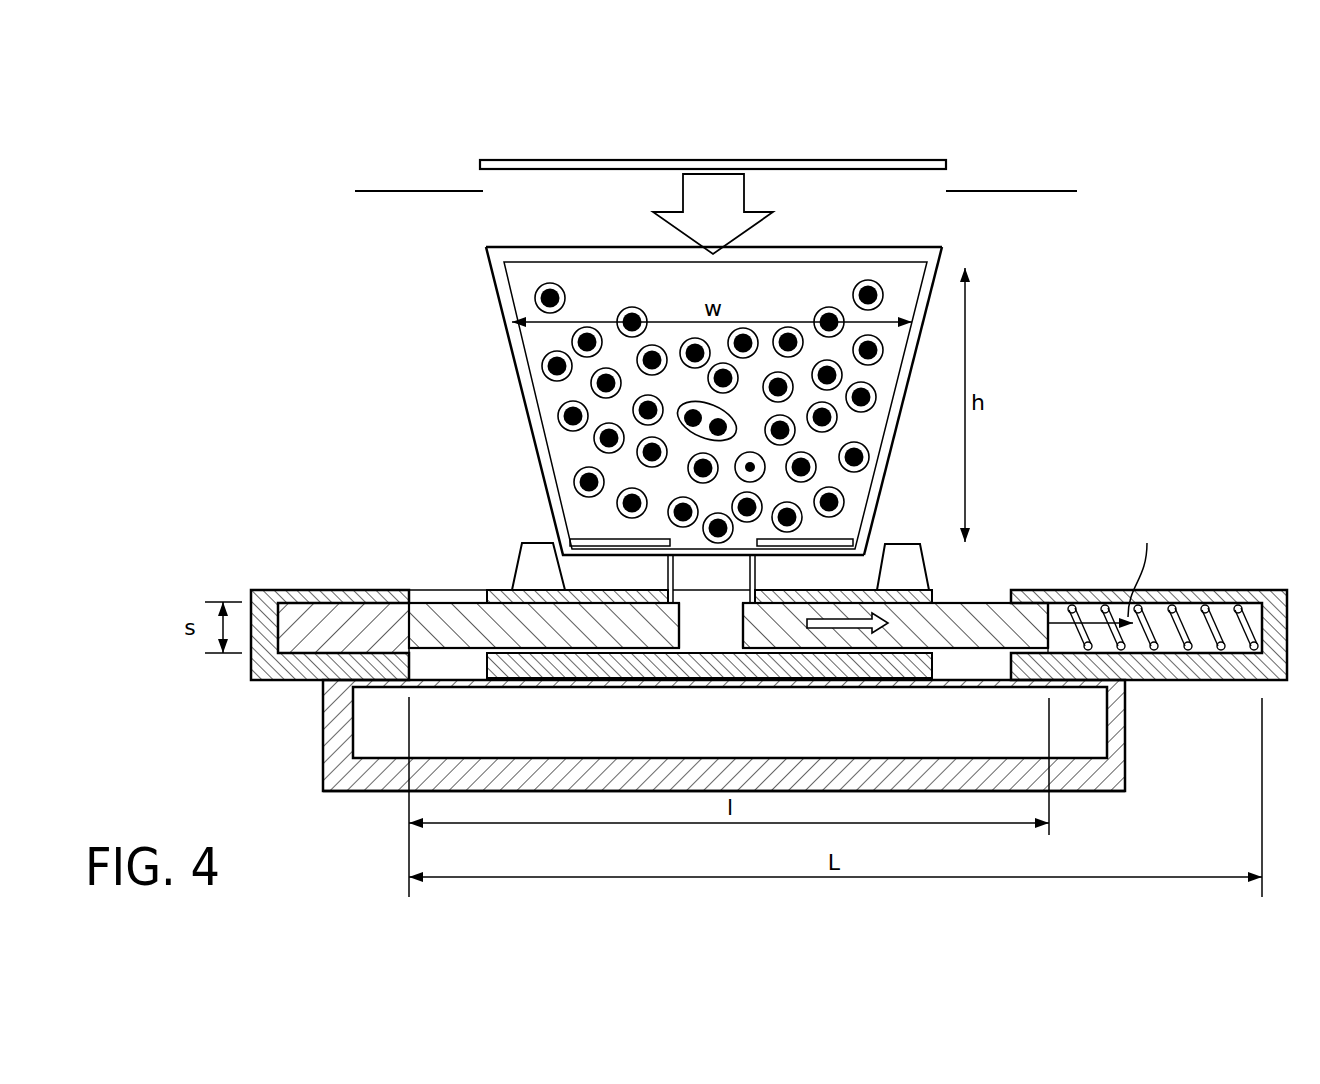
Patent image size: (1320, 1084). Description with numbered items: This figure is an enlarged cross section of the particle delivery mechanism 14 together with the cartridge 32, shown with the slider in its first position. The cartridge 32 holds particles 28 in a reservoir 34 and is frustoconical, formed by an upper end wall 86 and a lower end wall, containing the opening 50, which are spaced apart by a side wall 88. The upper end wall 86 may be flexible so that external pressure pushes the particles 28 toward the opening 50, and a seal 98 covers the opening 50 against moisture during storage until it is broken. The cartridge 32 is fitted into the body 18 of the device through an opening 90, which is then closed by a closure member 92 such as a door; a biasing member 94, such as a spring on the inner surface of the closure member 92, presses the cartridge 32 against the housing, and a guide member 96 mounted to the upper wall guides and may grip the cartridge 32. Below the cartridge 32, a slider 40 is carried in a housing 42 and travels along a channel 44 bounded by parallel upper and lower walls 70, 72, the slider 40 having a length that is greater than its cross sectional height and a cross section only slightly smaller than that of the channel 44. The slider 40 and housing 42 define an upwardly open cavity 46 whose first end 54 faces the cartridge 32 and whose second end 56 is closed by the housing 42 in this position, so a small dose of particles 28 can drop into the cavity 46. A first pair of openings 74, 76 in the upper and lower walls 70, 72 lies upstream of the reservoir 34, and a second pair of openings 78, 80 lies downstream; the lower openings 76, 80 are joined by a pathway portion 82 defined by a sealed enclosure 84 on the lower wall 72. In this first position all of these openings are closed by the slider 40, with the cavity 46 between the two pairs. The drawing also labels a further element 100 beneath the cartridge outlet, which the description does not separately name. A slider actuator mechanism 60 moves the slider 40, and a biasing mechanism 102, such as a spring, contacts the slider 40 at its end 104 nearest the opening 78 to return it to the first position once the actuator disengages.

The particle delivery mechanism 14 is at (322, 466).
The body 18 is at (370, 190).
The particles 28 is at (558, 416).
The cartridge 32 is at (558, 540).
The reservoir 34 is at (522, 277).
The slider 40 is at (1027, 610).
The housing 42 is at (441, 598).
The channel 44 is at (1222, 610).
The cavity 46 is at (712, 622).
The opening 50 is at (738, 545).
The first end 54 is at (728, 605).
The second end 56 is at (710, 643).
The slider actuator mechanism 60 is at (842, 623).
The upper wall 70 is at (1167, 603).
The lower wall 72 is at (287, 681).
The opening 74 is at (533, 562).
The opening 76 is at (445, 672).
The opening 78 is at (972, 595).
The opening 80 is at (972, 674).
The pathway portion 82 is at (920, 742).
The sealed enclosure 84 is at (515, 797).
The upper end wall 86 is at (542, 252).
The side wall 88 is at (923, 295).
The opening 90 is at (500, 188).
The closure member 92 is at (565, 158).
The biasing member 94 is at (744, 192).
The guide member 96 is at (537, 452).
The seal 98 is at (707, 562).
The outlet post 100 is at (667, 572).
The biasing mechanism 102 is at (1178, 625).
The end 104 is at (1075, 620).